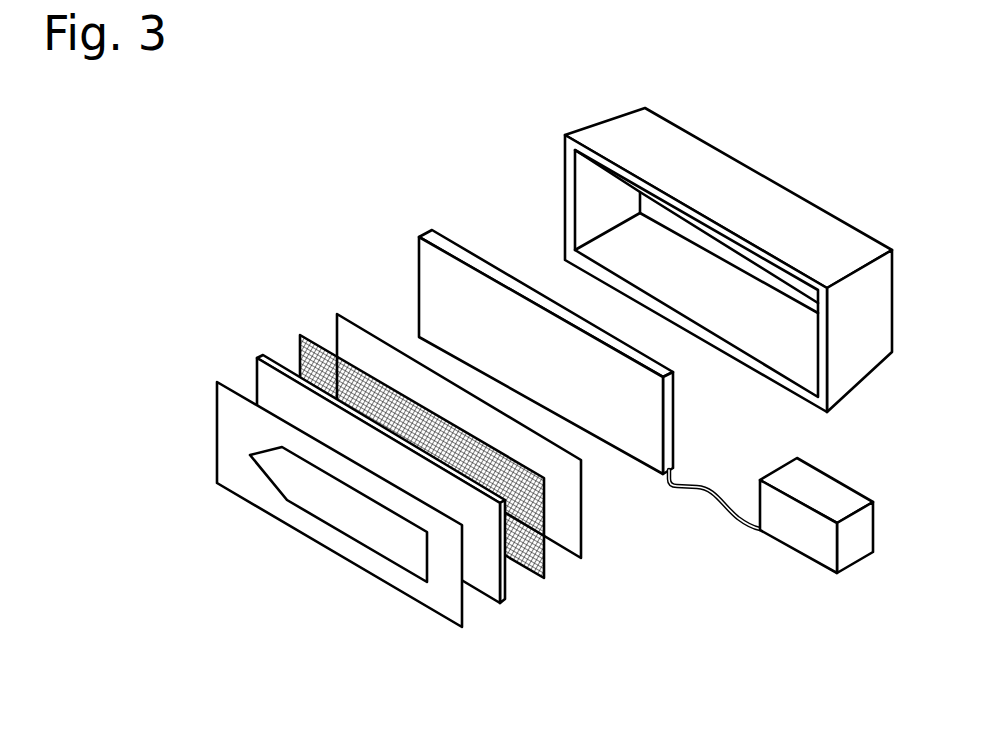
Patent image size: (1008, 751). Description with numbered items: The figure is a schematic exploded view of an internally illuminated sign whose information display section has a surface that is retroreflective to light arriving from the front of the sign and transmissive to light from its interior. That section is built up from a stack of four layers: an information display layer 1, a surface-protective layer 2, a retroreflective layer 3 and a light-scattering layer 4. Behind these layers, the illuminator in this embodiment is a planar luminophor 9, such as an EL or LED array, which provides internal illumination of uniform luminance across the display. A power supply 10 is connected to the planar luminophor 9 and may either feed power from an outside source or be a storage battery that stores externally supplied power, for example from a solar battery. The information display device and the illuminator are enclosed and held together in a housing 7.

The information display layer 1 is at (453, 608).
The surface-protective layer 2 is at (493, 590).
The retroreflective layer 3 is at (545, 562).
The light-scattering layer 4 is at (573, 530).
The housing 7 is at (855, 353).
The planar luminophor 9 is at (637, 447).
The power supply 10 is at (815, 547).